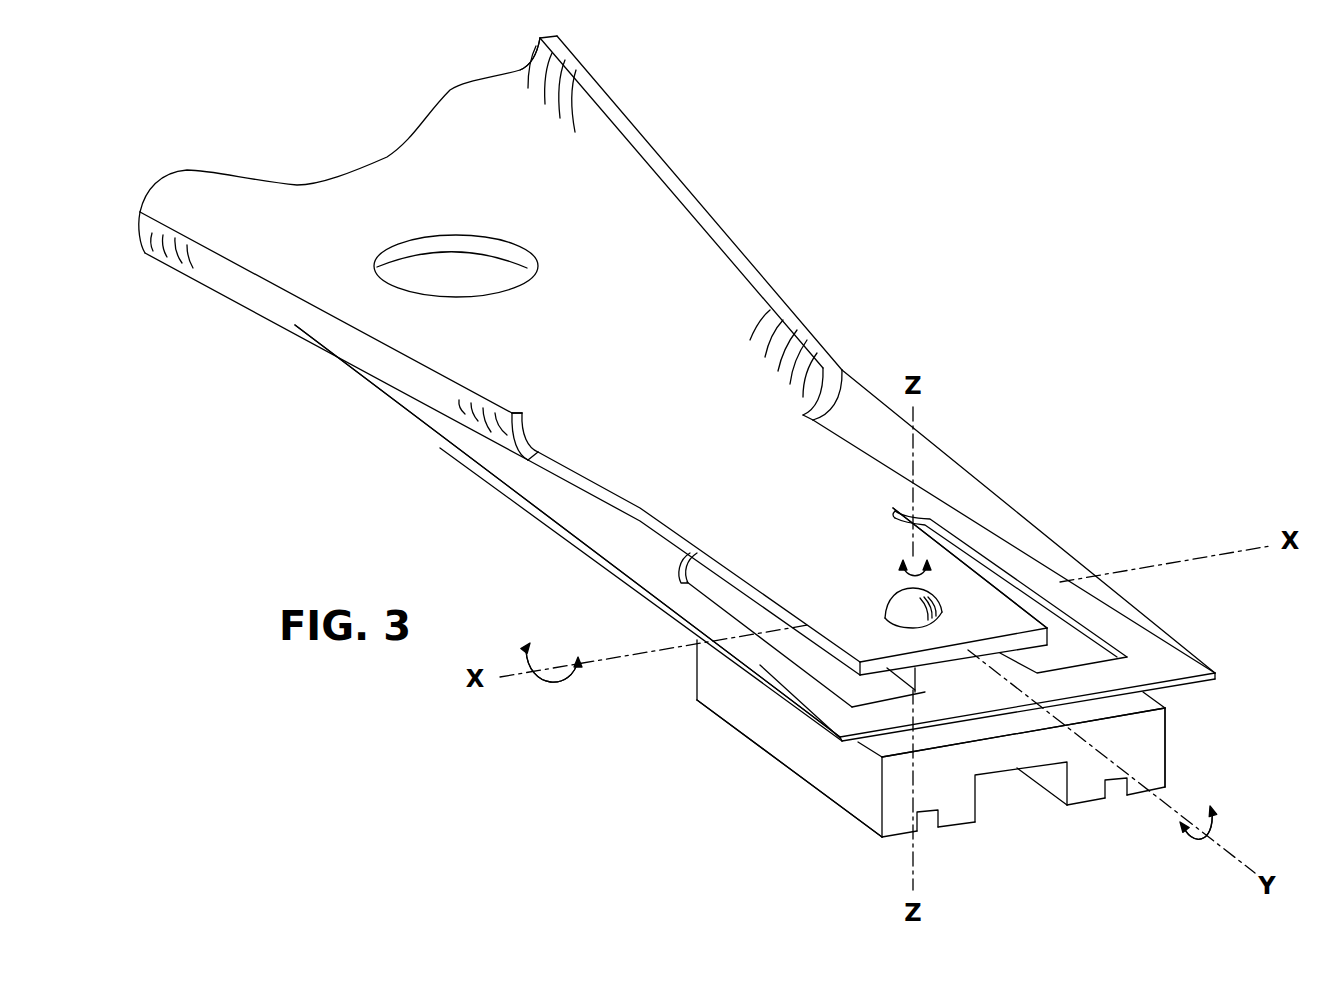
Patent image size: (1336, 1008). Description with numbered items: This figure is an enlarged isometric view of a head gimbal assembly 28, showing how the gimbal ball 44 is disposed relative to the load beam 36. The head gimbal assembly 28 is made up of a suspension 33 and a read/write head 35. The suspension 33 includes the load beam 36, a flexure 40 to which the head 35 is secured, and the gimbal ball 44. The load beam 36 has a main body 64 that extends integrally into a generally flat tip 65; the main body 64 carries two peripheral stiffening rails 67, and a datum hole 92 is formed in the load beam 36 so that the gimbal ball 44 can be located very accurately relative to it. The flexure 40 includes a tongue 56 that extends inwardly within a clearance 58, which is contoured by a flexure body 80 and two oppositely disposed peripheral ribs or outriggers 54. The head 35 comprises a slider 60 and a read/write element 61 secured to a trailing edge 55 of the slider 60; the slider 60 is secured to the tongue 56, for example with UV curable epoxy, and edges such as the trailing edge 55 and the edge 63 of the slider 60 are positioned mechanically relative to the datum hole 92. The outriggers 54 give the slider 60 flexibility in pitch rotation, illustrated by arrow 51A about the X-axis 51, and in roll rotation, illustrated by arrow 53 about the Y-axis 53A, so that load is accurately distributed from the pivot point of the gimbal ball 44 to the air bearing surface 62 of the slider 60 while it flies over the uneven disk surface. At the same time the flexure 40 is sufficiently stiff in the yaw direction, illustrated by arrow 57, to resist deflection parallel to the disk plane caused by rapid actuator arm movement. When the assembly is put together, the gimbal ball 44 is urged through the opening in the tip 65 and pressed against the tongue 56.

The head gimbal assembly 28 is at (754, 95).
The suspension 33 is at (792, 277).
The read/write head 35 is at (743, 737).
The load beam 36 is at (688, 188).
The flexure 40 is at (487, 477).
The gimbal ball 44 is at (890, 603).
The X-axis 51 is at (575, 673).
The pitch rotation arrow 51A is at (522, 675).
The roll rotation arrow 53 is at (1215, 827).
The Y-axis 53A is at (1253, 857).
The outriggers 54 is at (1147, 647).
The trailing edge 55 is at (1157, 740).
The tongue 56 is at (998, 653).
The yaw direction arrow 57 is at (917, 578).
The clearance 58 is at (710, 598).
The slider 60 is at (823, 767).
The read/write element 61 is at (937, 827).
The air bearing surface 62 is at (1088, 800).
The slider edge 63 is at (860, 798).
The main body 64 is at (572, 100).
The tip 65 is at (942, 580).
The stiffening rails 67 is at (813, 337).
The flexure body 80 is at (460, 437).
The datum hole 92 is at (480, 287).